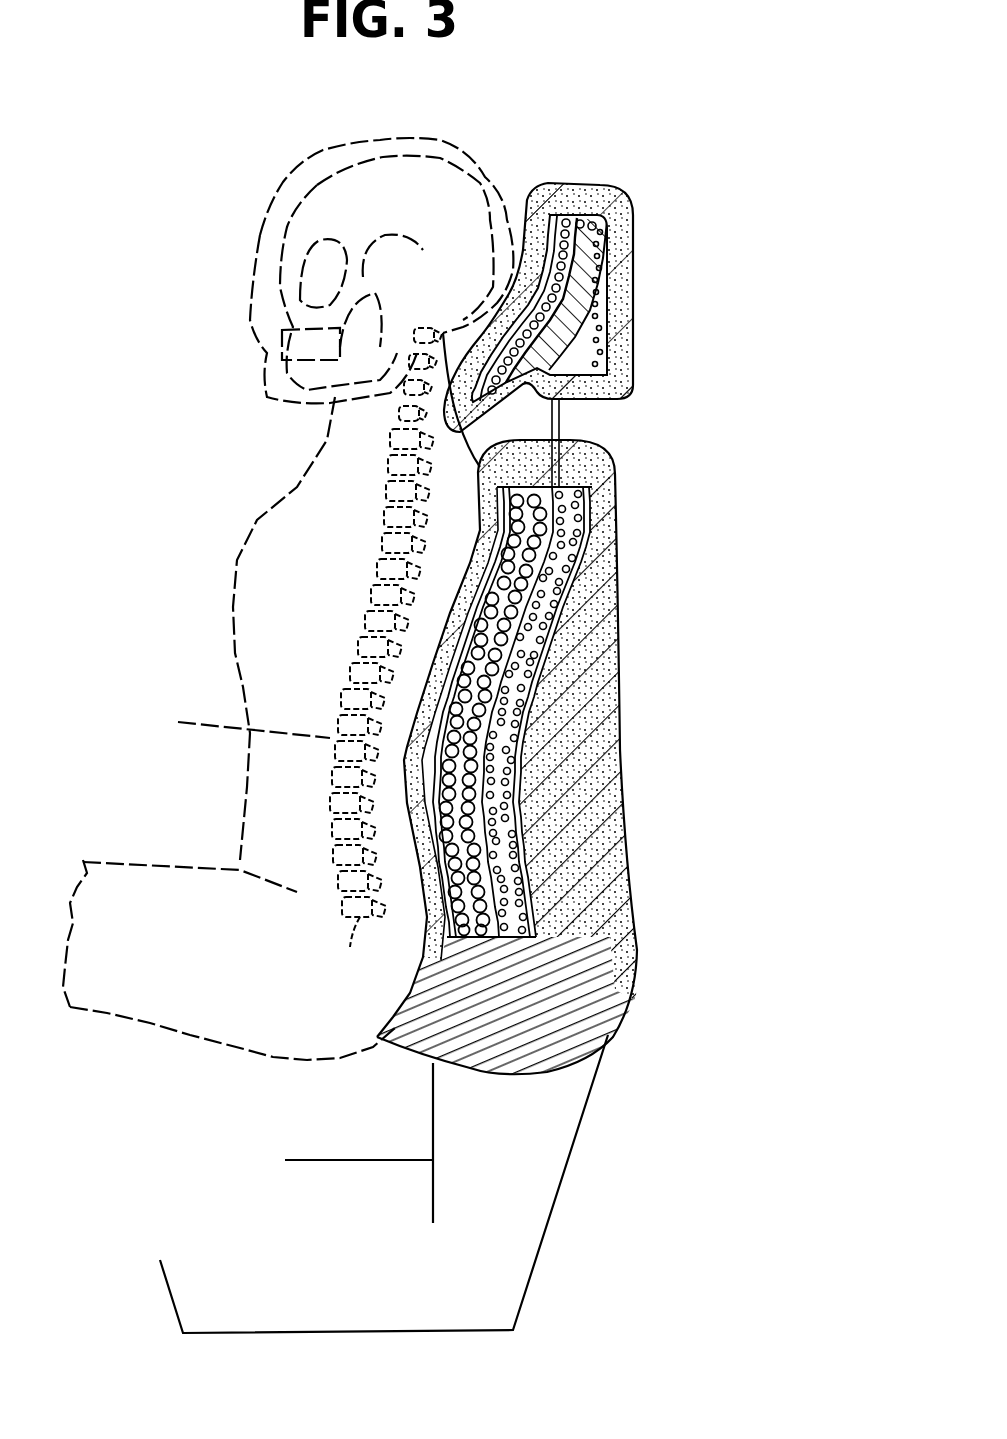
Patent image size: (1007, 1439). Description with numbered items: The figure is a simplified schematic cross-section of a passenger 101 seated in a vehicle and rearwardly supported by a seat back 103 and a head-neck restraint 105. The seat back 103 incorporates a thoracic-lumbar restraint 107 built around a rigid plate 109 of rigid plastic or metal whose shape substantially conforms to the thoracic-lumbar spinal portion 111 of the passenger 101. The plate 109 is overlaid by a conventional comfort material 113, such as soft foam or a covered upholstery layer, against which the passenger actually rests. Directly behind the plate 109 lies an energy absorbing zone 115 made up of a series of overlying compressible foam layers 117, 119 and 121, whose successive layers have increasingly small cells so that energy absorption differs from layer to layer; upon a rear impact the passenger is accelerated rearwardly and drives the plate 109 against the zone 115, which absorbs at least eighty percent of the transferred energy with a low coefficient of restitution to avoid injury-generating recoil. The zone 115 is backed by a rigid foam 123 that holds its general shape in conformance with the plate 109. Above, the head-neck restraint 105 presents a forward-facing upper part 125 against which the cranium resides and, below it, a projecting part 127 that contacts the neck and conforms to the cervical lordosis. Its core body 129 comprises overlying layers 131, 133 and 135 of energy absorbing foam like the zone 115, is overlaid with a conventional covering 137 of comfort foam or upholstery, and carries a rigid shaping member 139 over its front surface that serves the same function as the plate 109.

The passenger 101 is at (228, 500).
The seat back 103 is at (642, 543).
The head-neck restraint 105 is at (655, 360).
The thoracic-lumbar restraint 107 is at (420, 642).
The rigid plate 109 is at (402, 808).
The thoracic-lumbar spinal portion 111 is at (231, 721).
The comfort material 113 is at (597, 488).
The energy absorbing zone 115 is at (597, 598).
The layer 117 is at (560, 650).
The layer 119 is at (510, 664).
The layer 121 is at (507, 757).
The rigid foam 123 is at (567, 810).
The upper part 125 is at (515, 252).
The projecting part 127 is at (450, 373).
The core body 129 is at (633, 384).
The layer 131 is at (633, 266).
The layer 133 is at (620, 303).
The layer 135 is at (608, 328).
The covering 137 is at (575, 182).
The rigid shaping member 139 is at (517, 273).